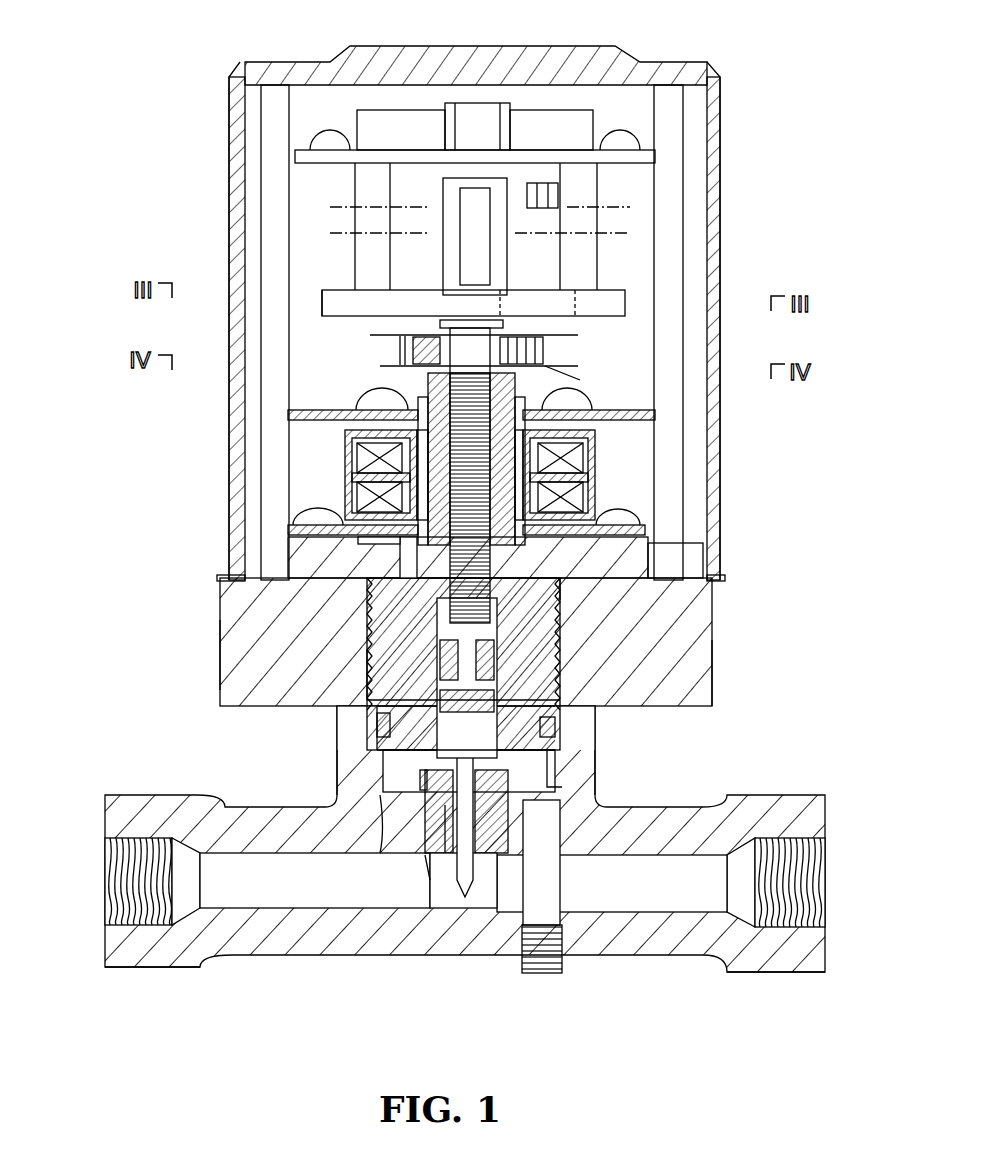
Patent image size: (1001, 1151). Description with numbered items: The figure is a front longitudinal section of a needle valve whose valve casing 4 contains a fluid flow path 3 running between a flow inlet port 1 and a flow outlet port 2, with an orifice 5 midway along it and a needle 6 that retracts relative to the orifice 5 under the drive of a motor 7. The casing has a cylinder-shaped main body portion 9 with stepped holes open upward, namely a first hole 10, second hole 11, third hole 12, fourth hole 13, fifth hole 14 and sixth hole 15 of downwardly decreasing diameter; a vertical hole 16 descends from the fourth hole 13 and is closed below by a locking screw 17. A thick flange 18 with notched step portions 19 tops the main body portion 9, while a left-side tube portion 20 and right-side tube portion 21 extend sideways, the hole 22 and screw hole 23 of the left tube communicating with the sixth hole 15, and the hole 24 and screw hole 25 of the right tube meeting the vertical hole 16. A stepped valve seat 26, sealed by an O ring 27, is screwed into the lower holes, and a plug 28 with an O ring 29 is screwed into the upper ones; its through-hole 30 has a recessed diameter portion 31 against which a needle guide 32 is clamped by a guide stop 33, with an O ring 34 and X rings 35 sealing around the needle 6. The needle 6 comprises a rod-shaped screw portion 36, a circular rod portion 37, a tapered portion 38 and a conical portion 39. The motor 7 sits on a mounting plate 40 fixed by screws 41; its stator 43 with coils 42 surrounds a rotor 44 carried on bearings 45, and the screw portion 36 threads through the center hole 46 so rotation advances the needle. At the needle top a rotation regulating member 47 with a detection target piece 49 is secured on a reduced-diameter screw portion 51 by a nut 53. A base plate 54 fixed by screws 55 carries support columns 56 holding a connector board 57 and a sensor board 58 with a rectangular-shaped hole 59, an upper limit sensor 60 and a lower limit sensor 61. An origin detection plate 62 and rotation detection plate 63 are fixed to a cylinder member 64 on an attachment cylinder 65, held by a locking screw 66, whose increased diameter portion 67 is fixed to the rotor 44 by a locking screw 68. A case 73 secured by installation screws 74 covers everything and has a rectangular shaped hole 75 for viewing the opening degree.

The flow inlet port 1 is at (807, 860).
The flow outlet port 2 is at (118, 852).
The fluid flow path 3 is at (550, 813).
The valve casing 4 is at (716, 668).
The orifice 5 is at (505, 775).
The needle 6 is at (610, 590).
The motor 7 is at (608, 470).
The main body portion 9 is at (347, 765).
The first hole 10 is at (675, 565).
The second hole 11 is at (495, 617).
The third hole 12 is at (715, 704).
The fourth hole 13 is at (420, 783).
The fifth hole 14 is at (430, 860).
The sixth hole 15 is at (445, 805).
The vertical hole 16 is at (556, 805).
The locking screw 17 is at (537, 968).
The flange 18 is at (232, 660).
The step portions 19 is at (228, 570).
The left-side tube portion 20 is at (225, 966).
The right-side tube portion 21 is at (699, 962).
The hole 22 is at (270, 912).
The screw hole 23 is at (128, 930).
The hole 24 is at (663, 911).
The screw hole 25 is at (793, 927).
The valve seat 26 is at (522, 780).
The O ring 27 is at (392, 818).
The plug 28 is at (390, 600).
The O ring 29 is at (558, 728).
The through-hole 30 is at (360, 628).
The recessed diameter portion 31 is at (365, 665).
The needle guide 32 is at (560, 650).
The guide stop 33 is at (530, 703).
The O ring 34 is at (375, 745).
The X rings 35 is at (335, 706).
The rod-shaped screw portion 36 is at (360, 600).
The circular rod portion 37 is at (380, 748).
The tapered portion 38 is at (482, 915).
The conical portion 39 is at (464, 900).
The mounting plate 40 is at (655, 525).
The screws 41 is at (610, 495).
The coils 42 is at (357, 470).
The stator 43 is at (350, 500).
The rotor 44 is at (300, 522).
The bearings 45 is at (650, 415).
The center hole 46 is at (420, 455).
The rotation regulating member 47 is at (337, 288).
The detection target piece 49 is at (520, 310).
The reduced-diameter screw portion 51 is at (482, 287).
The nut 53 is at (500, 300).
The base plate 54 is at (705, 445).
The screws 55 is at (600, 445).
The support columns 56 is at (317, 183).
The connector board 57 is at (658, 157).
The sensor board 58 is at (530, 175).
The rectangular-shaped hole 59 is at (445, 180).
The upper limit sensor 60 is at (555, 197).
The lower limit sensor 61 is at (632, 327).
The origin detection plate 62 is at (373, 332).
The rotation detection plate 63 is at (400, 366).
The cylinder member 64 is at (400, 348).
The attachment cylinder 65 is at (440, 325).
The locking screw 66 is at (547, 355).
The increased diameter portion 67 is at (300, 412).
The locking screw 68 is at (580, 380).
The case 73 is at (726, 80).
The installation screws 74 is at (276, 90).
The rectangular shaped hole 75 is at (463, 220).